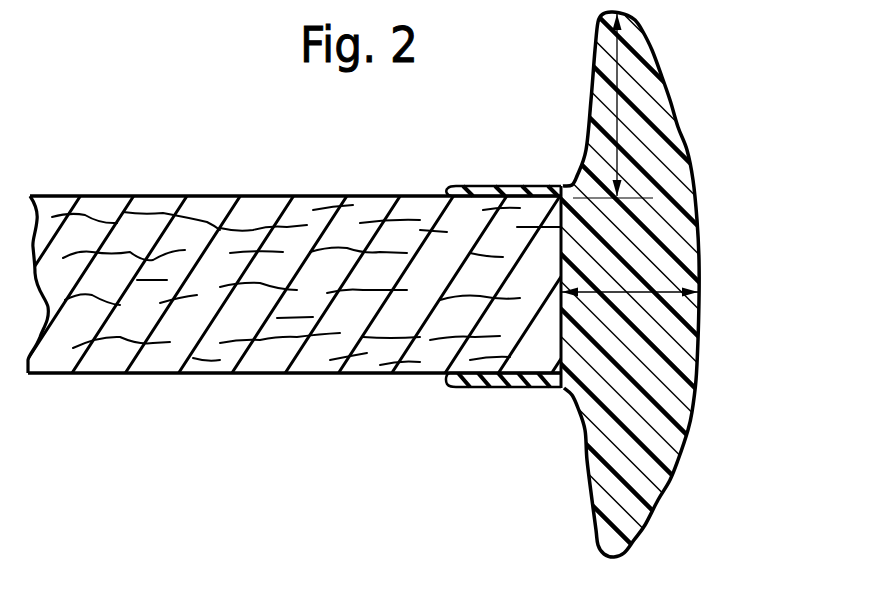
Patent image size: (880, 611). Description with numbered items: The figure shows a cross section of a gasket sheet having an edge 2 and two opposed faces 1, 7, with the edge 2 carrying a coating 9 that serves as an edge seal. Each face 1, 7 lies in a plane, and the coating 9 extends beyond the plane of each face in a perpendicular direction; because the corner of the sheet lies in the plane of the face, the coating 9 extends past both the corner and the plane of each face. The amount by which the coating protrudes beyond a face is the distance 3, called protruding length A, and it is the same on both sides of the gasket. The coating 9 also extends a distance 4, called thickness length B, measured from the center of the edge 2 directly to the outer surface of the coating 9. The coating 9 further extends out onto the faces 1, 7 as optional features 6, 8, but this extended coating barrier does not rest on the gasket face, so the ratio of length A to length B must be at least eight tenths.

The face 1 is at (317, 195).
The edge 2 is at (558, 240).
The distance 3 is at (608, 108).
The distance 4 is at (650, 291).
The optional feature 6 is at (485, 188).
The face 7 is at (316, 374).
The optional feature 8 is at (491, 388).
The coating 9 is at (700, 322).